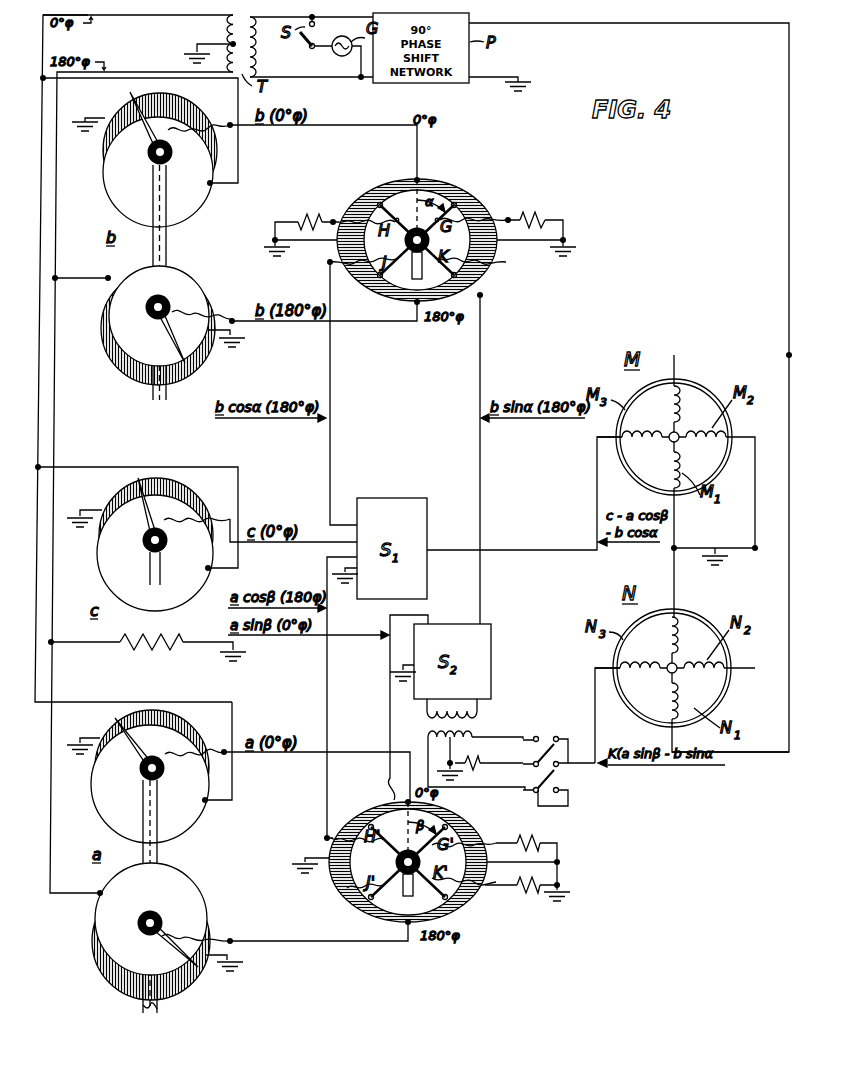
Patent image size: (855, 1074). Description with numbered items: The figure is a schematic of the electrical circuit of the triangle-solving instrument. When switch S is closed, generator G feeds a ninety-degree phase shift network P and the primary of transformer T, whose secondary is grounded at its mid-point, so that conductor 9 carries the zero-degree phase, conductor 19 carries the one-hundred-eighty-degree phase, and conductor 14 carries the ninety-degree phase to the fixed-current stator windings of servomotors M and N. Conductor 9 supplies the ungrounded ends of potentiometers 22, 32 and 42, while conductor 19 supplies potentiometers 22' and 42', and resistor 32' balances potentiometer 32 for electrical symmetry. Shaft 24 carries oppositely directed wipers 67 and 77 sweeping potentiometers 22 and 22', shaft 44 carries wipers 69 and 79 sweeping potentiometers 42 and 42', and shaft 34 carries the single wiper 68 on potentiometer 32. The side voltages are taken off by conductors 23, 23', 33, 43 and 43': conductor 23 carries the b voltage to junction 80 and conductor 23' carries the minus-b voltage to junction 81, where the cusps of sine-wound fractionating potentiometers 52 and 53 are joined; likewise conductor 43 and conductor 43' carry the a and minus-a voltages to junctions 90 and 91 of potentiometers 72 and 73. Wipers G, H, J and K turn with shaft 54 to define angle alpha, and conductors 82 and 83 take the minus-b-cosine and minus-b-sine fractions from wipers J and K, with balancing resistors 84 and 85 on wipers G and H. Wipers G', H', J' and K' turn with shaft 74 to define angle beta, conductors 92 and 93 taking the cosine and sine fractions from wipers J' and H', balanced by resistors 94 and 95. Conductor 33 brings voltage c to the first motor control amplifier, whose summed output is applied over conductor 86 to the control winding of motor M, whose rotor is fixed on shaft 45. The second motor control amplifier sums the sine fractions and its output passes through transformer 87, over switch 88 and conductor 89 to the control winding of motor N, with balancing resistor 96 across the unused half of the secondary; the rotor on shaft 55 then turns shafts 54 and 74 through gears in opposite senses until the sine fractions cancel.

The conductor 9 is at (117, 15).
The conductor 19 is at (156, 73).
The conductor 14 is at (566, 23).
The potentiometer 22 is at (164, 159).
The potentiometer 22' is at (148, 327).
The conductor 23 is at (200, 142).
The conductor 23' is at (207, 342).
The shaft 24 is at (167, 236).
The wiper 67 is at (142, 138).
The wiper 77 is at (172, 330).
The potentiometer 32 is at (149, 544).
The resistor 32' is at (148, 649).
The conductor 33 is at (171, 521).
The shaft 34 is at (146, 576).
The wiper 68 is at (145, 523).
The potentiometer 42 is at (143, 776).
The potentiometer 42' is at (135, 931).
The conductor 43 is at (196, 766).
The conductor 43' is at (202, 924).
The shaft 44 is at (158, 856).
The wiper 69 is at (128, 754).
The wiper 79 is at (166, 936).
The junction 80 is at (419, 178).
The junction 81 is at (411, 304).
The conductor 82 is at (328, 376).
The conductor 83 is at (478, 370).
The balancing resistor 84 is at (540, 218).
The balancing resistor 85 is at (310, 218).
The potentiometer 52 is at (456, 202).
The potentiometer 53 is at (374, 198).
The shaft 54 is at (420, 276).
The shaft 45 is at (671, 433).
The shaft 55 is at (669, 665).
The conductor 86 is at (516, 554).
The transformer 87 is at (474, 735).
The switch 88 is at (567, 779).
The conductor 89 is at (595, 684).
The junction 90 is at (398, 807).
The junction 91 is at (400, 927).
The conductor 92 is at (325, 802).
The conductor 93 is at (388, 778).
The balancing resistor 94 is at (536, 838).
The balancing resistor 95 is at (520, 894).
The balancing resistor 96 is at (476, 770).
The potentiometer 72 is at (468, 893).
The potentiometer 73 is at (347, 894).
The shaft 74 is at (392, 893).